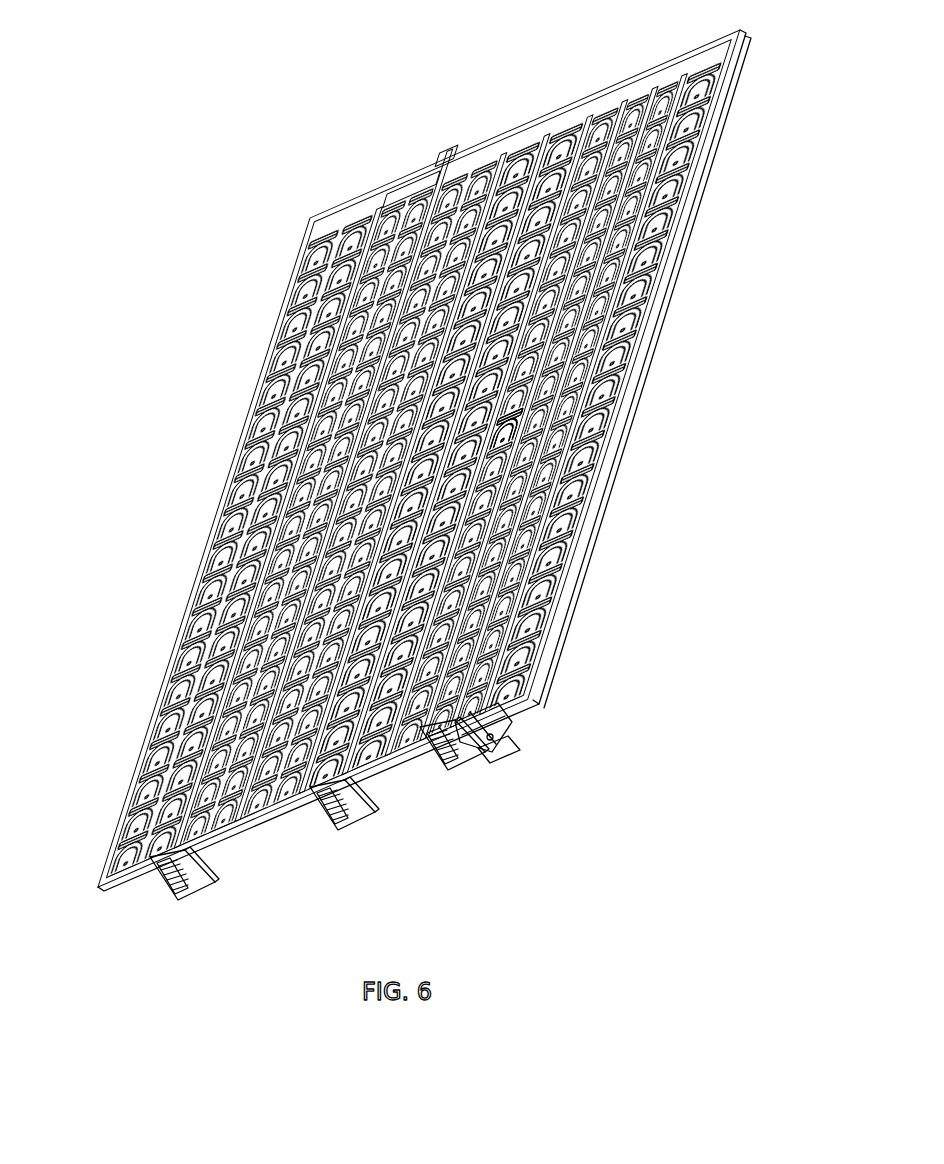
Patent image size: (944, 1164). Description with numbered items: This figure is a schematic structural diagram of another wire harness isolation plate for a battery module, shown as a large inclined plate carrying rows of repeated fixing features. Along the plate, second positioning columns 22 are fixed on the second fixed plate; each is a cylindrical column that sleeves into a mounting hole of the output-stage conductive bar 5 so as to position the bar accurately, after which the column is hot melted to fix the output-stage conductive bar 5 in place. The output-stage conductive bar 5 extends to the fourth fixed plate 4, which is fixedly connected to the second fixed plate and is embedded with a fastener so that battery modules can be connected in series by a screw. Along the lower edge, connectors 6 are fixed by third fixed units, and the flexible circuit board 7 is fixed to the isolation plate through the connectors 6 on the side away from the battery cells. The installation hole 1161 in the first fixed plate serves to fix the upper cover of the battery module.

The second positioning column 22 is at (436, 444).
The output-stage conductive bar 5 is at (393, 200).
The installation hole 1161 is at (506, 428).
The fourth fixed plate 4 is at (492, 757).
The connector 6 is at (163, 887).
The flexible circuit board 7 is at (419, 458).